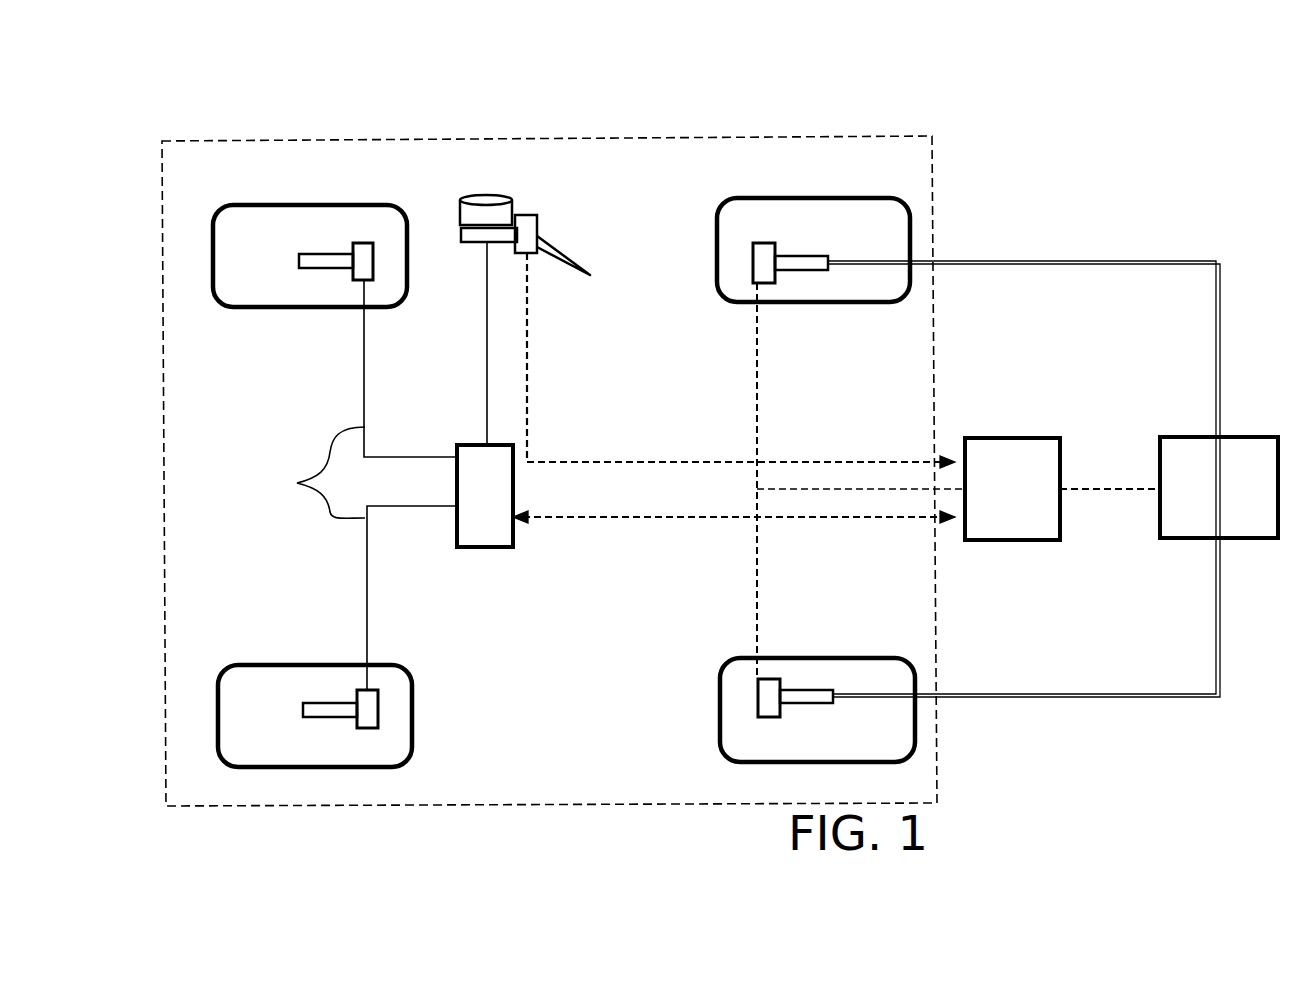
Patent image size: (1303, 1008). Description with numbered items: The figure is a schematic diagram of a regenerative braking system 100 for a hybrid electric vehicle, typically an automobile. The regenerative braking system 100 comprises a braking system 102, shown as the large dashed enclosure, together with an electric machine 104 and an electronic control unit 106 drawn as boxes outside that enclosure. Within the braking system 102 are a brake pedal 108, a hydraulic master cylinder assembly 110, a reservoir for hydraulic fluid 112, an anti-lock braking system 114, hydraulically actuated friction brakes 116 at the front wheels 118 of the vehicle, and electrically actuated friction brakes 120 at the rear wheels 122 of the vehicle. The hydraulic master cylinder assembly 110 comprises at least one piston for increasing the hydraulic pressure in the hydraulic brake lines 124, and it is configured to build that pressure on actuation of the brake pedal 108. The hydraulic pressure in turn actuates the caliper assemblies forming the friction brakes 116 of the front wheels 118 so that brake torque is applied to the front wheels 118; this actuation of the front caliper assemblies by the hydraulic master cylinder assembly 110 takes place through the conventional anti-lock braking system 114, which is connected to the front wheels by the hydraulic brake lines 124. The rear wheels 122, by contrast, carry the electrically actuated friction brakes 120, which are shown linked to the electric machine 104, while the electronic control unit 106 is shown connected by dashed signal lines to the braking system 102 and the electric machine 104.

The regenerative braking system 100 is at (1162, 107).
The braking system 102 is at (330, 136).
The electric machine 104 is at (1169, 487).
The electronic control unit 106 is at (786, 466).
The brake pedal 108 is at (588, 272).
The hydraulic master cylinder assembly 110 is at (538, 217).
The reservoir for hydraulic fluid 112 is at (505, 194).
The anti-lock braking system 114 is at (498, 552).
The hydraulically actuated friction brakes 116 is at (352, 279).
The front wheels 118 is at (288, 206).
The electrically actuated friction brakes 120 is at (753, 263).
The rear wheels 122 is at (823, 200).
The hydraulic brake lines 124 is at (297, 483).